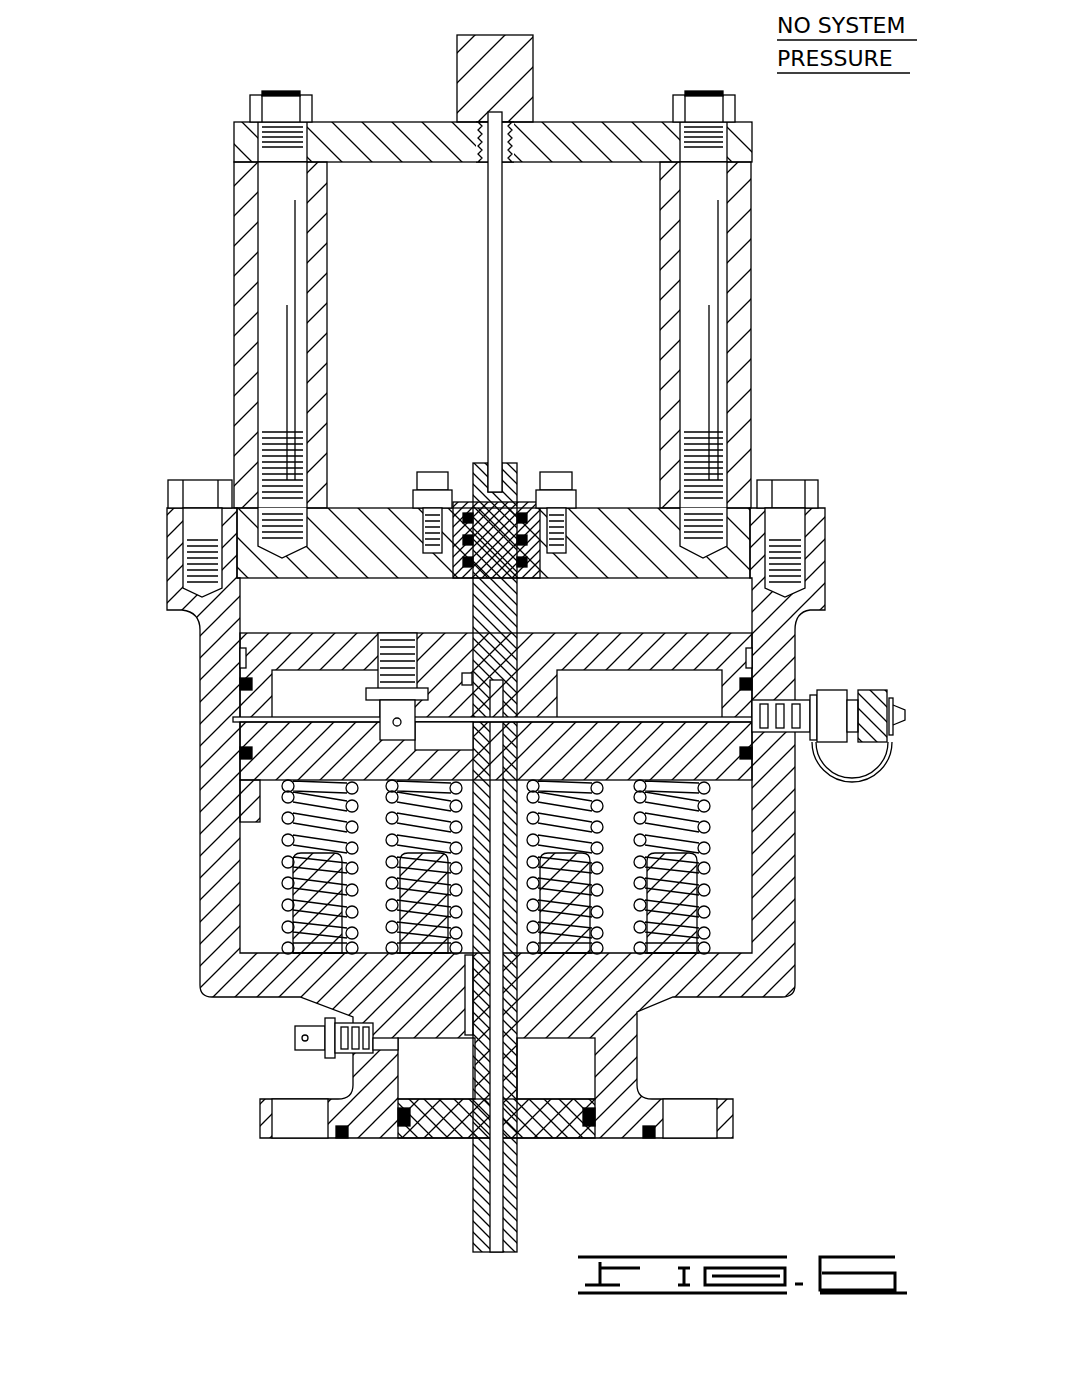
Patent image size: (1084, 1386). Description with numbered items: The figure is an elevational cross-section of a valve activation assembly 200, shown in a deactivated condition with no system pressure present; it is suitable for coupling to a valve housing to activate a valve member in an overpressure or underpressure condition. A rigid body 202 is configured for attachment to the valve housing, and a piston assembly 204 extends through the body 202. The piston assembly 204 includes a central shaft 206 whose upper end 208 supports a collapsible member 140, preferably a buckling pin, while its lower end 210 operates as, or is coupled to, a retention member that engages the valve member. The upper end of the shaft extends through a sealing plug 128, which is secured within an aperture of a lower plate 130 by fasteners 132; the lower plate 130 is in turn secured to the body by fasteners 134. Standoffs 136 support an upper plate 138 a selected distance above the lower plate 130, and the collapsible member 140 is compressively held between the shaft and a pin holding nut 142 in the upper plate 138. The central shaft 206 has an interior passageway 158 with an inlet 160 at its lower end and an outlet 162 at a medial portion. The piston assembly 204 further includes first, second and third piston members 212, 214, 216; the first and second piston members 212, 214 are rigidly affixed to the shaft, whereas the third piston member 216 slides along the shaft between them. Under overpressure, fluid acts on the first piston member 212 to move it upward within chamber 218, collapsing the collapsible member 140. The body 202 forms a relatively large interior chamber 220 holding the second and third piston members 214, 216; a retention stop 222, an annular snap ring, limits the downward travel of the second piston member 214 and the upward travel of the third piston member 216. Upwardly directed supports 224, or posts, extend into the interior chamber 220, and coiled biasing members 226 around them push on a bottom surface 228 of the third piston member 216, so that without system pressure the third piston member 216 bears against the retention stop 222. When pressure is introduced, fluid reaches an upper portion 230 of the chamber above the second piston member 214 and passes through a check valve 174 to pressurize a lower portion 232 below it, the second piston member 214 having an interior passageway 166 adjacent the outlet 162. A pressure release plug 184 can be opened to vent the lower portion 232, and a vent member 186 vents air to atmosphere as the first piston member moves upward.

The valve activation assembly 200 is at (212, 40).
The pin holding nut 142 is at (500, 42).
The upper plate 138 is at (418, 128).
The standoffs 136 is at (248, 222).
The collapsible member 140 is at (498, 280).
The sealing plug 128 is at (470, 462).
The upper end 208 is at (510, 462).
The fasteners 132 is at (440, 472).
The lower plate 130 is at (375, 515).
The fasteners 134 is at (205, 478).
The interior chamber 220 is at (712, 607).
The central shaft 206 is at (512, 614).
The second piston member 214 is at (278, 628).
The interior passageway 166 is at (467, 666).
The lower portion 232 is at (672, 680).
The pressure release plug 184 is at (873, 690).
The outlet 162 is at (558, 688).
The check valve 174 is at (373, 685).
The upper portion 230 is at (250, 616).
The retention stop 222 is at (240, 715).
The third piston member 216 is at (240, 748).
The rigid body 202 is at (210, 768).
The bottom surface 228 is at (245, 808).
The biasing members 226 is at (450, 797).
The supports 224 is at (425, 880).
The vent member 186 is at (292, 1036).
The chamber 218 is at (455, 1088).
The interior passageway 158 is at (522, 1050).
The piston assembly 204 is at (448, 1168).
The first piston member 212 is at (557, 1140).
The lower end 210 is at (517, 1180).
The inlet 160 is at (497, 1252).